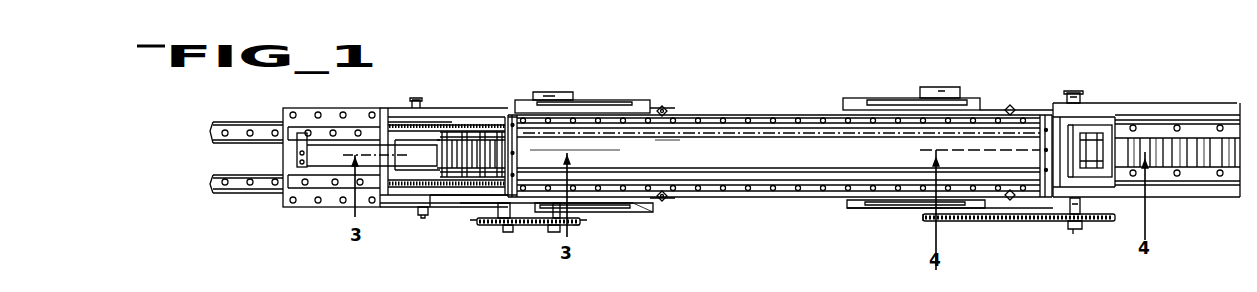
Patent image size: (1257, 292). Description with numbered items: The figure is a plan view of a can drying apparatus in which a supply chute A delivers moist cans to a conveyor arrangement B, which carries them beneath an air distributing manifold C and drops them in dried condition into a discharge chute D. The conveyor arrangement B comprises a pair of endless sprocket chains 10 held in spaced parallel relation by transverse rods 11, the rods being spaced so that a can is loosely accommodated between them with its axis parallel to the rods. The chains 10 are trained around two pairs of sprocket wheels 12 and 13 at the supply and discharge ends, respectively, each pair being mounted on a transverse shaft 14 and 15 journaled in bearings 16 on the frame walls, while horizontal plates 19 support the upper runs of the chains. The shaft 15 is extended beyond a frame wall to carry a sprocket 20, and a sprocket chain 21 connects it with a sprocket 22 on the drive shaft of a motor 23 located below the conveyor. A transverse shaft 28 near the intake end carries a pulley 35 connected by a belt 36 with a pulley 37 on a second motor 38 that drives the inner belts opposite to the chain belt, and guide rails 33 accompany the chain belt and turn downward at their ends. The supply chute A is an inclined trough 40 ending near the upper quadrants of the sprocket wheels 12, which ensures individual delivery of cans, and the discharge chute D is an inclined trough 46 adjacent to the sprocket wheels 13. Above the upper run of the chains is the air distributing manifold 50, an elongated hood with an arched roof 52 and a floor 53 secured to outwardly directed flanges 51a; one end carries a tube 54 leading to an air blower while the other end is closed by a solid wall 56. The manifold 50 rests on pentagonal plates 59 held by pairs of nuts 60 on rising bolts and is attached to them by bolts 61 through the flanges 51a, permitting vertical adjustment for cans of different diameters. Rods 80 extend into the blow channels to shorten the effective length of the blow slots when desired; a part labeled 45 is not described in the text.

The supply chute A is at (253, 196).
The conveyor arrangement B is at (467, 114).
The air distributing manifold C is at (757, 137).
The discharge chute D is at (1206, 180).
The endless sprocket chains 10 is at (478, 128).
The transverse rods 11 is at (438, 208).
The sprocket wheels 12 is at (433, 124).
The sprocket wheels 13 is at (1093, 122).
The transverse shaft 14 is at (421, 100).
The transverse shaft 15 is at (1076, 95).
The bearings 16 is at (414, 100).
The horizontal plate 19 is at (985, 108).
The sprocket 20 is at (1080, 229).
The sprocket chain 21 is at (1065, 208).
The sprocket 22 is at (935, 218).
The motor 23 is at (895, 208).
The transverse shaft 28 is at (511, 228).
The guide rails 33 is at (496, 128).
The pulley 35 is at (496, 222).
The belt 36 is at (580, 222).
The pulley 37 is at (579, 228).
The second motor 38 is at (652, 205).
The inclined trough 40 is at (287, 133).
The pusher bar 45 is at (331, 152).
The inclined trough 46 is at (1195, 135).
The air distributing manifold 50 is at (642, 155).
The outwardly directed flanges 51a is at (810, 117).
The arched roof 52 is at (726, 133).
The floor 53 is at (881, 112).
The tube 54 is at (1063, 130).
The solid wall 56 is at (521, 130).
The pentagonal plates 59 is at (681, 122).
The nuts 60 is at (657, 110).
The bolts 61 is at (656, 191).
The rods 80 is at (1110, 140).